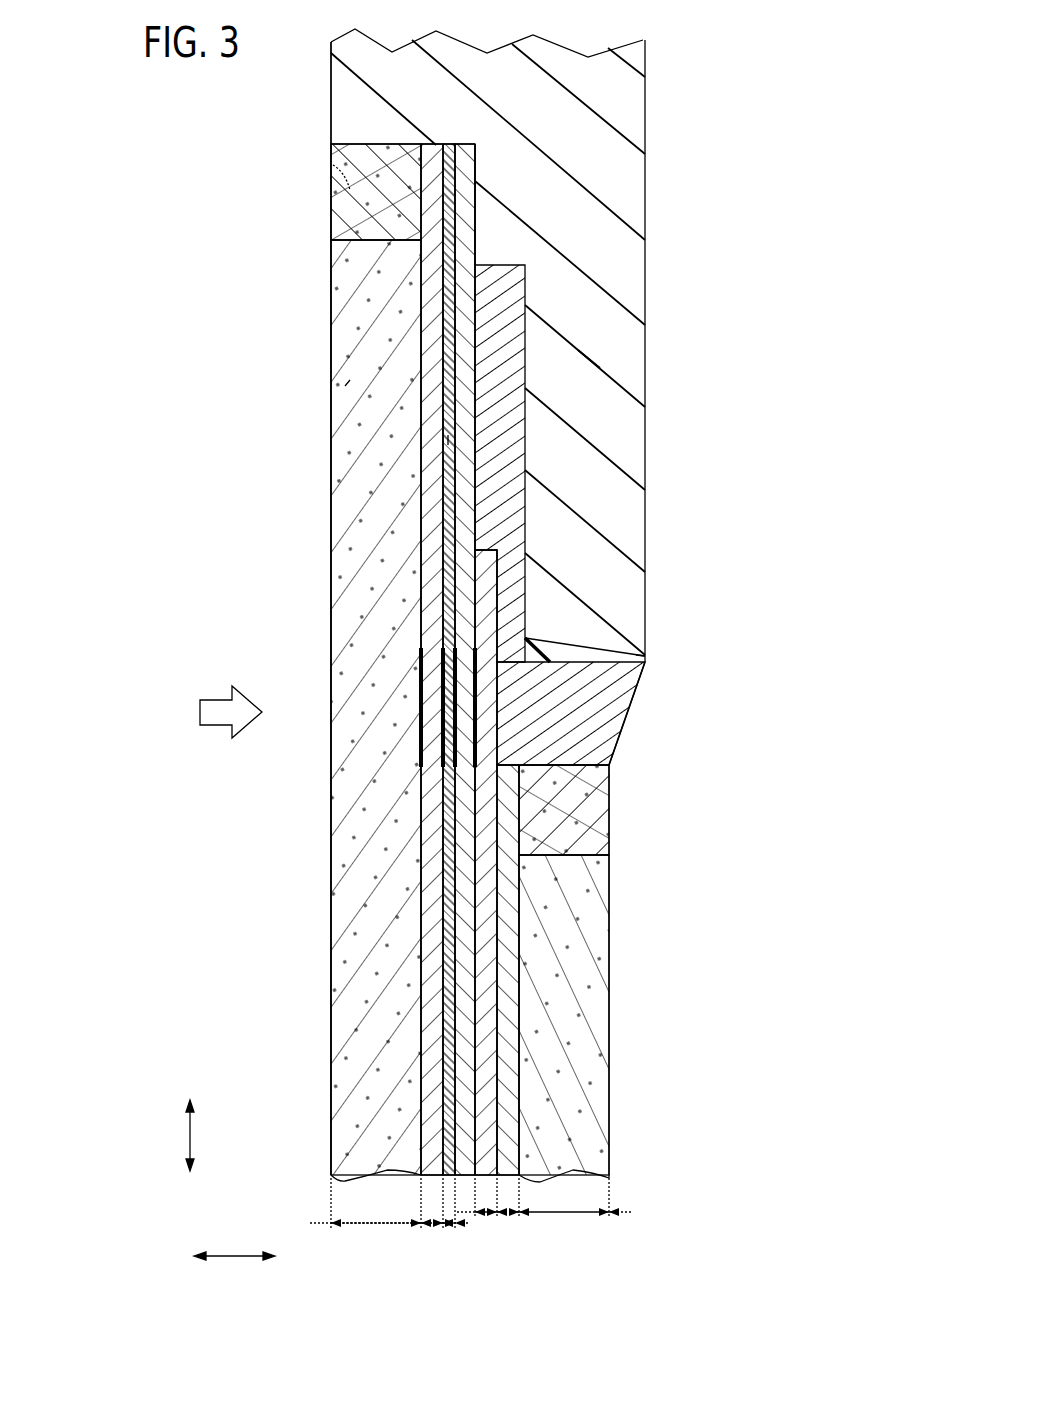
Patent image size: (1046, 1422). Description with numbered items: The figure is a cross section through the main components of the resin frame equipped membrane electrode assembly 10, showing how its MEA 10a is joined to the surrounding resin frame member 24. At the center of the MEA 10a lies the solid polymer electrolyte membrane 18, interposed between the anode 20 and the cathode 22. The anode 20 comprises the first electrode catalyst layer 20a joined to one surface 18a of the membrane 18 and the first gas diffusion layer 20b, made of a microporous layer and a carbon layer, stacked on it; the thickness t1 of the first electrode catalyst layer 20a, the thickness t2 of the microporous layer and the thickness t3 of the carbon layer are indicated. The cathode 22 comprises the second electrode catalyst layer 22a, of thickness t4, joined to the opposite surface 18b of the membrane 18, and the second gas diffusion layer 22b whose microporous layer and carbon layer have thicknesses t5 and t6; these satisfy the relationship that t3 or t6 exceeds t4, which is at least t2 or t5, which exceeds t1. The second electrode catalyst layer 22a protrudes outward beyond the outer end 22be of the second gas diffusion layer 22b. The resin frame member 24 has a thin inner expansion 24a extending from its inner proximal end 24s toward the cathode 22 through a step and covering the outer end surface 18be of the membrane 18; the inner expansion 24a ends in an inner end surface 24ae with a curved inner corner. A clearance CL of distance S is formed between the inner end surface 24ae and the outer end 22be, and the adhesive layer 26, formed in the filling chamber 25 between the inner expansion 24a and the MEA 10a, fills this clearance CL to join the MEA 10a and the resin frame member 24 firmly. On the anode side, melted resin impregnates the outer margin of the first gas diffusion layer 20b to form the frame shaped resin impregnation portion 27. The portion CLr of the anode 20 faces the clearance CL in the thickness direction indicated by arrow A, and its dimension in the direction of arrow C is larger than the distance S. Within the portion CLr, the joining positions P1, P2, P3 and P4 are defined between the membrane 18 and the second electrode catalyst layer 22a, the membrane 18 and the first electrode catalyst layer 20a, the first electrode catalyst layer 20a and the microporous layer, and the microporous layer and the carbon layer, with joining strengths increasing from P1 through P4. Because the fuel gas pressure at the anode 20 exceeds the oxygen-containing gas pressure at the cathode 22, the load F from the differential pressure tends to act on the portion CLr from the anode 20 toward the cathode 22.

The frame equipped membrane electrode assembly 10 is at (322, 104).
The MEA 10a is at (345, 386).
The solid polymer electrolyte membrane 18 is at (492, 659).
The one surface of the solid polymer electrolyte membrane 18a is at (452, 1083).
The surface of the solid polymer electrolyte membrane 18b is at (480, 1083).
The outer end surface of the solid polymer electrolyte membrane 18be is at (475, 375).
The anode 20 is at (333, 662).
The first electrode catalyst layer 20a is at (446, 872).
The first gas diffusion layer 20b is at (330, 662).
The cathode 22 is at (604, 866).
The second electrode catalyst layer 22a is at (487, 897).
The second gas diffusion layer 22b is at (613, 967).
The outer end of the second gas diffusion layer 22be is at (615, 752).
The resin frame member 24 is at (594, 50).
The inner expansion 24a is at (628, 447).
The inner end surface 24ae is at (622, 670).
The inner proximal end 24s is at (338, 172).
The filling chamber 25 is at (515, 440).
The adhesive layer 26 is at (513, 345).
The resin impregnation portion 27 is at (345, 211).
The clearance CL is at (588, 722).
The portion facing the clearance CLr is at (477, 748).
The joining position P1 is at (645, 656).
The joining position P2 is at (530, 641).
The joining position P3 is at (445, 690).
The joining position P4 is at (421, 664).
The distance S is at (609, 765).
The load F is at (220, 712).
The arrow C is at (200, 1135).
The arrow A is at (234, 1245).
The thickness of the first electrode catalyst layer t1 is at (449, 1224).
The thickness of the microporous layer t2 is at (432, 1224).
The thickness of the carbon layer t3 is at (376, 1237).
The thickness of the second electrode catalyst layer t4 is at (487, 1215).
The thickness of the microporous layer t5 is at (510, 1214).
The thickness of the carbon layer t6 is at (564, 1224).